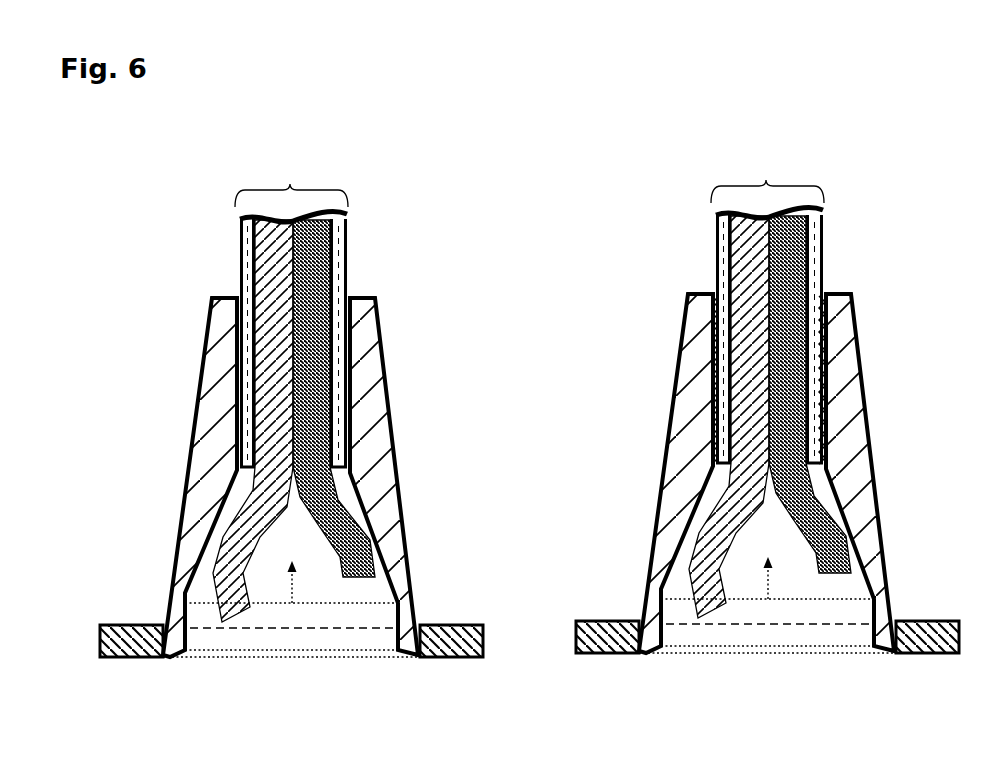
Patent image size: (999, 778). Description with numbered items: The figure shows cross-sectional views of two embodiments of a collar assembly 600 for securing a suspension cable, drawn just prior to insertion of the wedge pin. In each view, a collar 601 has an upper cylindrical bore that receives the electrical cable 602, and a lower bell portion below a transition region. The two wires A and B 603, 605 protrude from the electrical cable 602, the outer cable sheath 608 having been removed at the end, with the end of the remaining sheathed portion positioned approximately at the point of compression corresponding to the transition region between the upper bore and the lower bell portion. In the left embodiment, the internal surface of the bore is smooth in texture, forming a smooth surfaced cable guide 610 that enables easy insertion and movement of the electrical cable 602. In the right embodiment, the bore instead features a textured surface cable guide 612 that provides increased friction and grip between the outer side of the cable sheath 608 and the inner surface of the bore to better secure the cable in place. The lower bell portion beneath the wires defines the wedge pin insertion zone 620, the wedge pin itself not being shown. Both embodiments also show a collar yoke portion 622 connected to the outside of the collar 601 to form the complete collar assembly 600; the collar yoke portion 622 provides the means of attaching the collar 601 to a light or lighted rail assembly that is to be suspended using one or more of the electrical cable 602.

The collar assembly 600 is at (522, 168).
The collar 601 is at (690, 398).
The electrical cable 602 is at (290, 184).
The wire A 603 is at (748, 278).
The wire B 605 is at (780, 243).
The cable sheath 608 is at (240, 252).
The smooth surfaced cable guide 610 is at (238, 349).
The textured surface cable guide 612 is at (817, 323).
The wedge pin insertion zone 620 is at (768, 601).
The collar yoke portion 622 is at (118, 638).